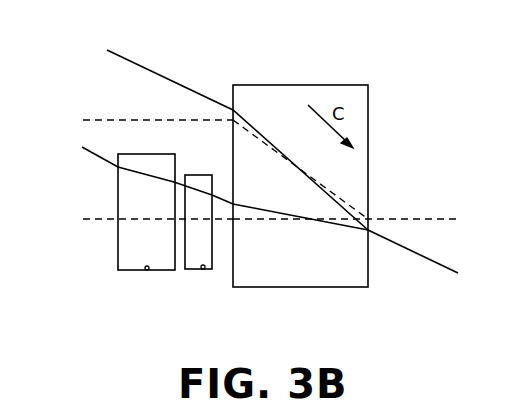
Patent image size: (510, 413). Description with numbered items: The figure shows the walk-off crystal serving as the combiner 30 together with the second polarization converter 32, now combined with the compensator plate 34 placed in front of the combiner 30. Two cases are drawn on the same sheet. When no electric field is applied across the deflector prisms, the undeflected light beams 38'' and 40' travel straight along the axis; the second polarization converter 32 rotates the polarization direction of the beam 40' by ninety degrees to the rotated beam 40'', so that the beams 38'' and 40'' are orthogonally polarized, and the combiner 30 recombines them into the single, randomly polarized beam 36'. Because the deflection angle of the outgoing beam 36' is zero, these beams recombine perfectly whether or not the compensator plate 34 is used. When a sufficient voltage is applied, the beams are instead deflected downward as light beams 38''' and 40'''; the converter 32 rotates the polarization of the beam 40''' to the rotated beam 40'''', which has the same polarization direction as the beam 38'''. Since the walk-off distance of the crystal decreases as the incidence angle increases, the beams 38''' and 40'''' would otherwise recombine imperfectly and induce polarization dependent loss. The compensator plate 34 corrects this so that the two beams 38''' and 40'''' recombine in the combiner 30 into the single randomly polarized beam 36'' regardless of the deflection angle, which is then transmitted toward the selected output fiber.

The combiner 30 is at (292, 85).
The second polarization converter 32 is at (202, 270).
The compensator plate 34 is at (145, 272).
The single beam 36' is at (345, 191).
The randomly polarized beam 36'' is at (413, 281).
The undeflected light beam 38'' is at (215, 144).
The deflected light beam 38''' is at (237, 124).
The undeflected light beam 40' is at (146, 248).
The rotated beam 40'' is at (294, 271).
The deflected light beam 40''' is at (136, 177).
The rotated beam 40'''' is at (205, 167).